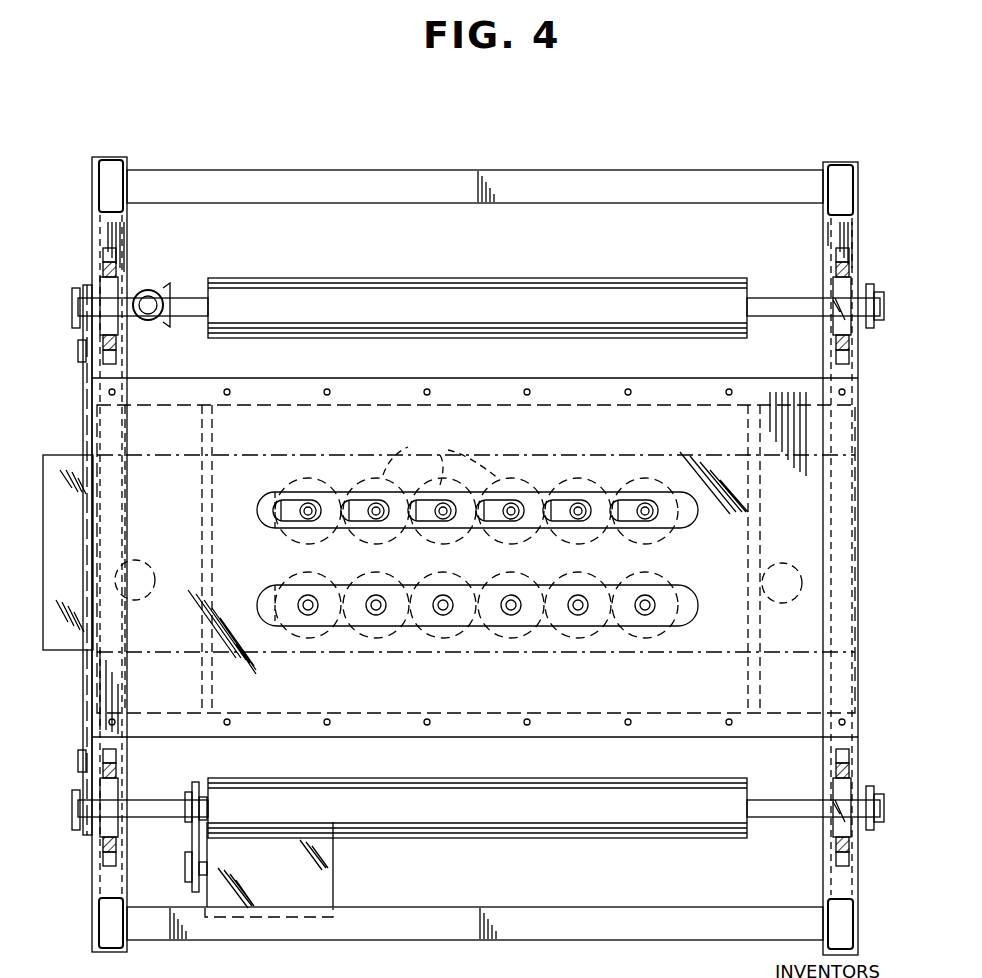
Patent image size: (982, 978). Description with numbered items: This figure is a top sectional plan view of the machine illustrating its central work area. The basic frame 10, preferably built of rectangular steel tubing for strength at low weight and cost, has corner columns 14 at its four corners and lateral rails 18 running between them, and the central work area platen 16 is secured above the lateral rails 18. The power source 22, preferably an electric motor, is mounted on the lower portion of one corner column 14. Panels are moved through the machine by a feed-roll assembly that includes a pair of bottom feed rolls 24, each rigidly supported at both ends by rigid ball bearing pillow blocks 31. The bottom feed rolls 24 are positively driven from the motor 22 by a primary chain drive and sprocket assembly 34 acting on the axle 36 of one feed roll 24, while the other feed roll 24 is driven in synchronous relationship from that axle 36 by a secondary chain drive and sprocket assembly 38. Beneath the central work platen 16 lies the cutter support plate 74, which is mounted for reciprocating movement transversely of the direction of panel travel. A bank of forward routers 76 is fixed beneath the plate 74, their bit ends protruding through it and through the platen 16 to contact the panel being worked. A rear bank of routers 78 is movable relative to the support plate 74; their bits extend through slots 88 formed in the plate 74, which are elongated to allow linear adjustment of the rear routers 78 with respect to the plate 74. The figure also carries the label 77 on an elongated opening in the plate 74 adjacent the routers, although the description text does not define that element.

The frame 10 is at (400, 186).
The corner column 14 is at (112, 162).
The central work area platen 16 is at (727, 557).
The lateral rail 18 is at (100, 287).
The power source 22 is at (305, 888).
The bottom feed roll 24 is at (590, 300).
The ball bearing pillow block 31 is at (835, 323).
The primary chain drive and sprocket assembly 34 is at (190, 840).
The axle 36 is at (772, 304).
The secondary chain drive and sprocket assembly 38 is at (92, 710).
The cutter support plate 74 is at (72, 468).
The forward router 76 is at (470, 645).
The slot 77 is at (268, 524).
The rear router 78 is at (441, 462).
The slot 88 is at (298, 512).